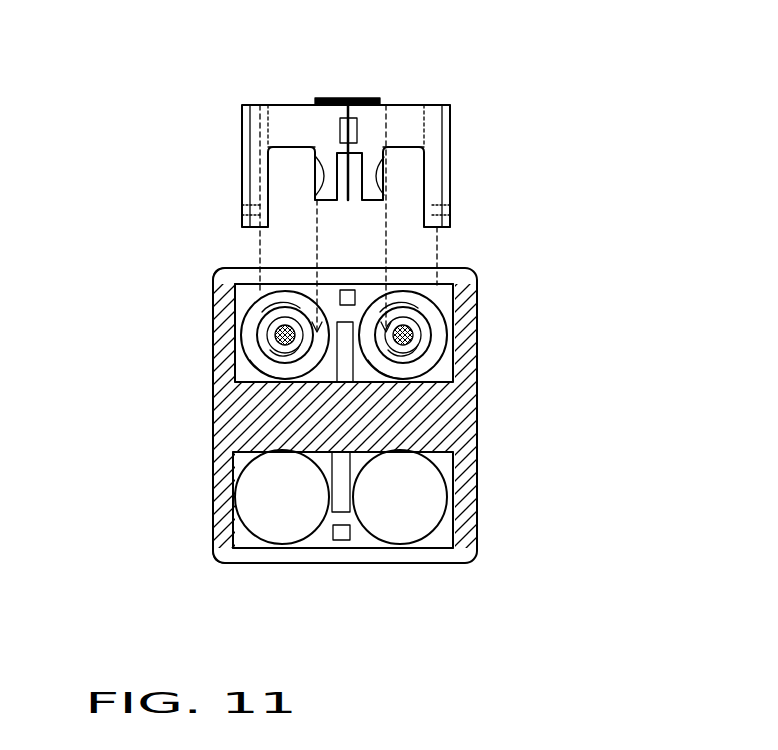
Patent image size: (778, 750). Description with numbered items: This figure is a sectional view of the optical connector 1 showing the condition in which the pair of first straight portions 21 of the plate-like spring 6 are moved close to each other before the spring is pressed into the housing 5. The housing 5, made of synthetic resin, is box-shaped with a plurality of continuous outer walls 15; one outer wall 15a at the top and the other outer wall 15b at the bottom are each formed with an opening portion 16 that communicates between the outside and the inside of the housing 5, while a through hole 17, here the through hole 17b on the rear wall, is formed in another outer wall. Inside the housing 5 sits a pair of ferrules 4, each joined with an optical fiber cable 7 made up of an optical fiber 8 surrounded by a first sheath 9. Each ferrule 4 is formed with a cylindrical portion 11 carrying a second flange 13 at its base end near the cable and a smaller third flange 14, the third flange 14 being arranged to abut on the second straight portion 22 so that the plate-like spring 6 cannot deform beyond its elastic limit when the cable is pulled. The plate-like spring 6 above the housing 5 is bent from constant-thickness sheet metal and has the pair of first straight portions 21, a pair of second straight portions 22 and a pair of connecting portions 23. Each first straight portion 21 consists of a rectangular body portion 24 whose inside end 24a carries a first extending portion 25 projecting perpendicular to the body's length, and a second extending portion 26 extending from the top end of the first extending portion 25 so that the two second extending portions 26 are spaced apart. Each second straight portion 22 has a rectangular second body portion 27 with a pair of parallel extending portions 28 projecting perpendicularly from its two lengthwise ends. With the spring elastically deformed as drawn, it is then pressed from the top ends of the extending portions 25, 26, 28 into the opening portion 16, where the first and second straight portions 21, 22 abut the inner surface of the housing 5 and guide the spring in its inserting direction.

The optical connector 1 is at (522, 244).
The ferrule 4 is at (270, 358).
The housing 5 is at (340, 461).
The plate-like spring 6 is at (350, 167).
The optical fiber cable 7 is at (282, 412).
The optical fiber 8 is at (262, 395).
The first sheath 9 is at (262, 432).
The cylindrical portion 11 is at (262, 300).
The second flange 13 is at (280, 328).
The third flange 14 is at (250, 383).
The outer wall 15 is at (312, 461).
The one outer wall 15a is at (240, 268).
The other outer wall 15b is at (340, 562).
The opening portion 16 is at (213, 278).
The through hole 17 is at (346, 471).
The through hole 17b is at (235, 525).
The first straight portion 21 is at (298, 105).
The second straight portion 22 is at (362, 98).
The connecting portion 23 is at (452, 170).
The body portion 24 is at (288, 105).
The end 24a is at (310, 132).
The first extending portion 25 is at (327, 168).
The second extending portion 26 is at (315, 203).
The second body portion 27 is at (260, 104).
The extending portion 28 is at (262, 205).